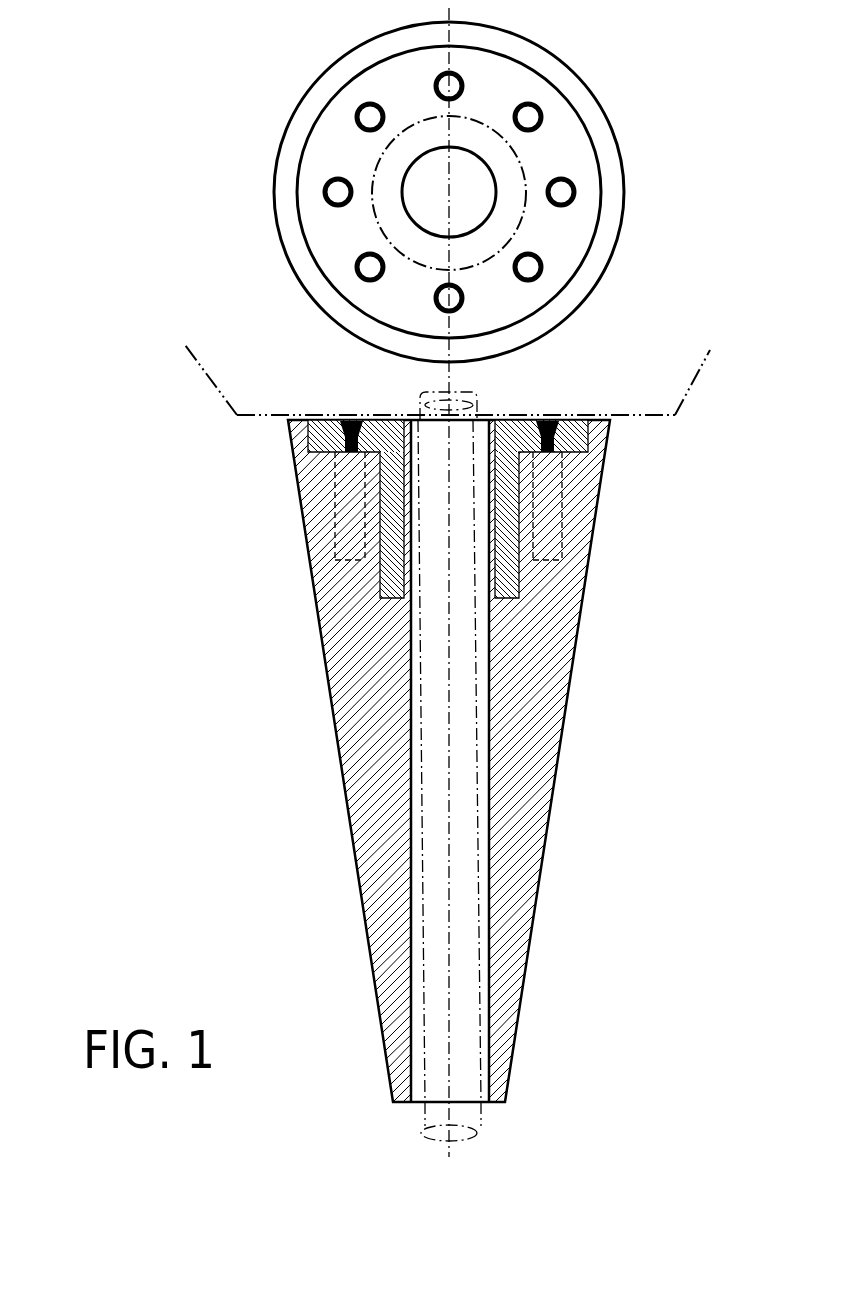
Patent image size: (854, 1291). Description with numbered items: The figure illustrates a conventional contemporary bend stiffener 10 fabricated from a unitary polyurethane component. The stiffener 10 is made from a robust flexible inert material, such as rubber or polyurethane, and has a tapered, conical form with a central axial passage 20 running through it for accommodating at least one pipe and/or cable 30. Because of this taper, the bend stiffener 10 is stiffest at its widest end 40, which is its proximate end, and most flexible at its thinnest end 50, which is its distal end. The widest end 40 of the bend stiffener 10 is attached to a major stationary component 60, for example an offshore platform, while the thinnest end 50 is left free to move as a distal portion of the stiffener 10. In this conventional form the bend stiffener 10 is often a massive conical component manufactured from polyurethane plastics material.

The bend stiffener 10 is at (160, 291).
The central axial passage 20 is at (480, 632).
The pipe and/or cable 30 is at (418, 708).
The widest end 40 is at (310, 473).
The thinnest end 50 is at (503, 1057).
The major stationary component 60 is at (255, 389).